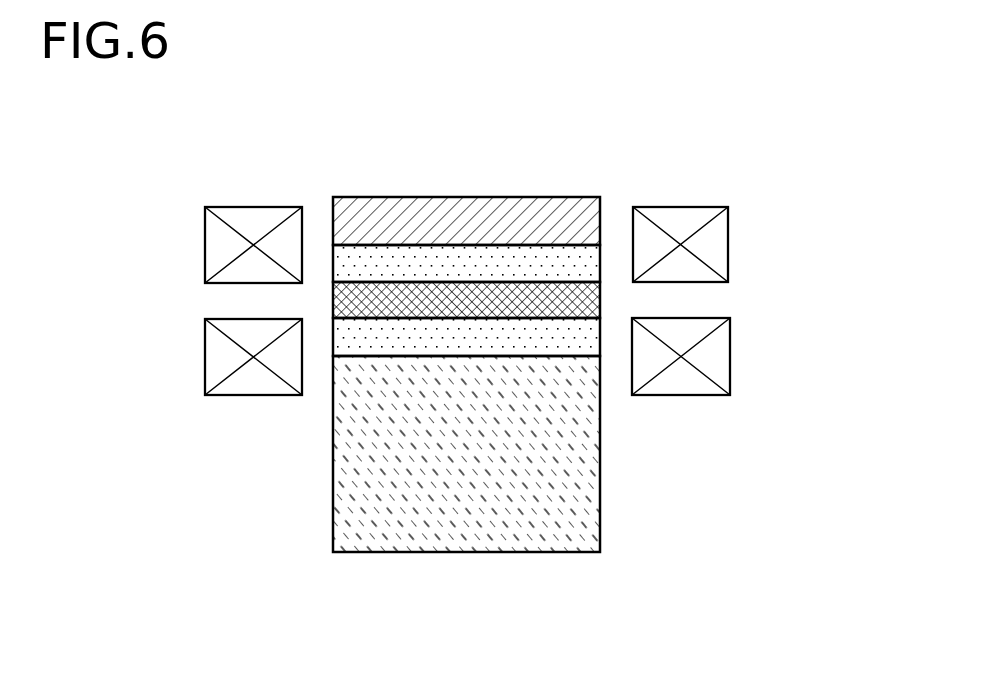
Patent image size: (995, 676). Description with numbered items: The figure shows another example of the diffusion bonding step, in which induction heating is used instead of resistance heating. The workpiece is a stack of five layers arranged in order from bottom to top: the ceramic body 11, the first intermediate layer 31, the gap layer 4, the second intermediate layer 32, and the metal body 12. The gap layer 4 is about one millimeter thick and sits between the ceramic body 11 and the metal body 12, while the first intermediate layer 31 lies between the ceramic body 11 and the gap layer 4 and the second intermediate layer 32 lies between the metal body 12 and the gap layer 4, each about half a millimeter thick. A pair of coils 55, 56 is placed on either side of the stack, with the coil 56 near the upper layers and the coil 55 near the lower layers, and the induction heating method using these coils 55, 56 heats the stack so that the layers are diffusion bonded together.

The metal body 12 is at (475, 217).
The second intermediate layer 32 is at (578, 263).
The gap layer 4 is at (578, 298).
The first intermediate layer 31 is at (578, 337).
The ceramic body 11 is at (472, 522).
The coil 56 is at (225, 250).
The coil 55 is at (225, 357).